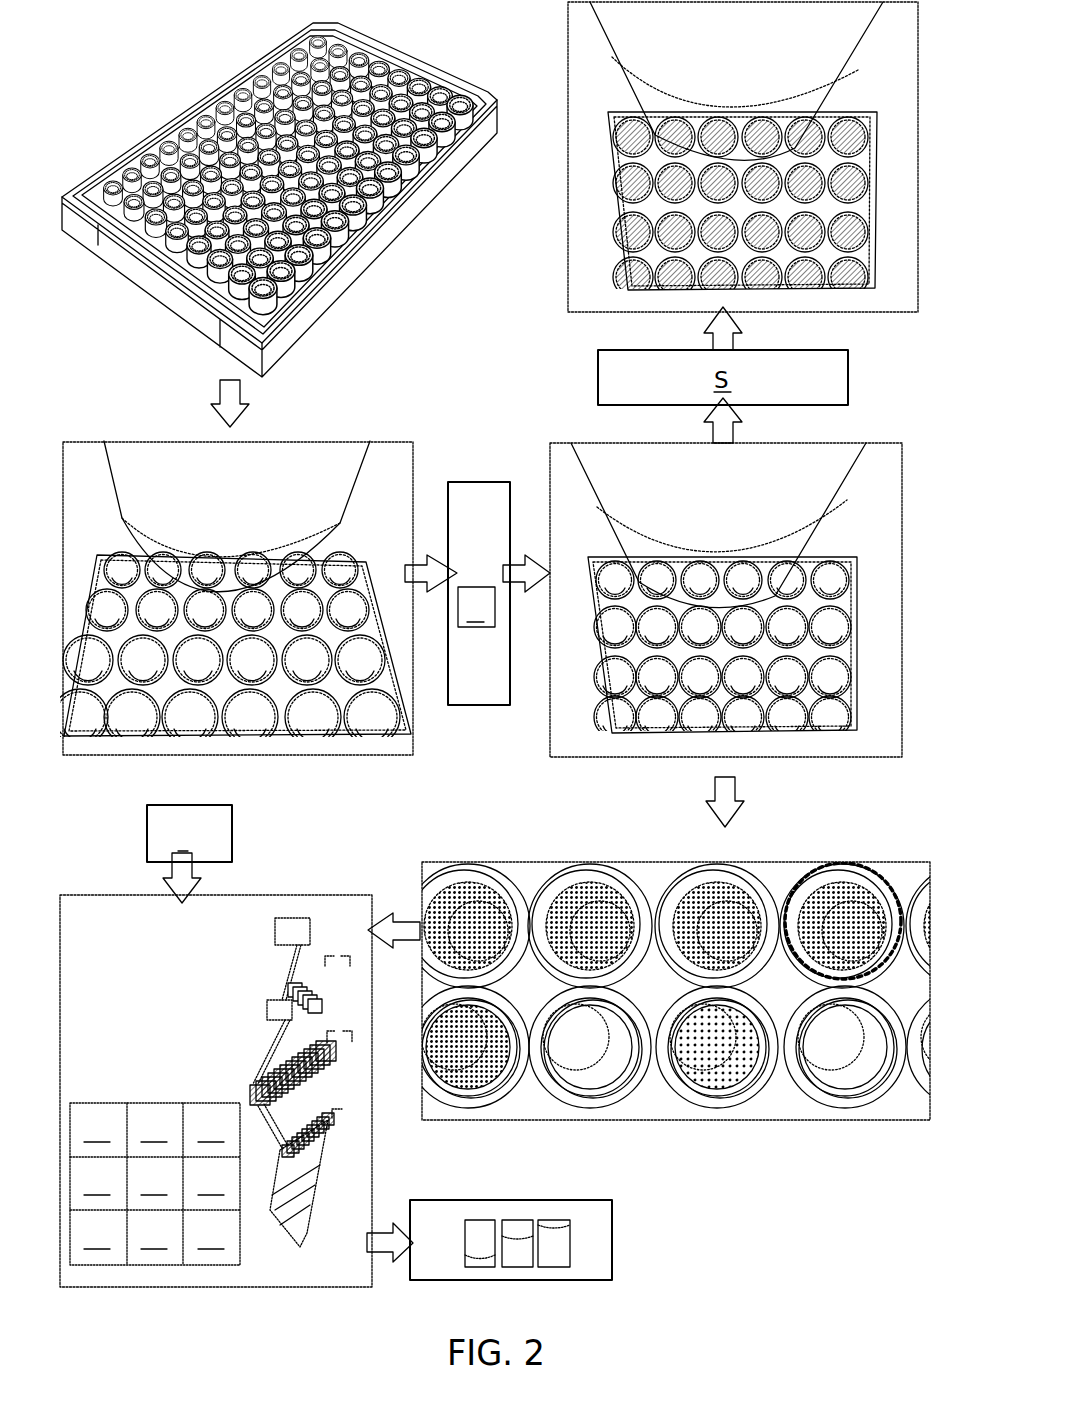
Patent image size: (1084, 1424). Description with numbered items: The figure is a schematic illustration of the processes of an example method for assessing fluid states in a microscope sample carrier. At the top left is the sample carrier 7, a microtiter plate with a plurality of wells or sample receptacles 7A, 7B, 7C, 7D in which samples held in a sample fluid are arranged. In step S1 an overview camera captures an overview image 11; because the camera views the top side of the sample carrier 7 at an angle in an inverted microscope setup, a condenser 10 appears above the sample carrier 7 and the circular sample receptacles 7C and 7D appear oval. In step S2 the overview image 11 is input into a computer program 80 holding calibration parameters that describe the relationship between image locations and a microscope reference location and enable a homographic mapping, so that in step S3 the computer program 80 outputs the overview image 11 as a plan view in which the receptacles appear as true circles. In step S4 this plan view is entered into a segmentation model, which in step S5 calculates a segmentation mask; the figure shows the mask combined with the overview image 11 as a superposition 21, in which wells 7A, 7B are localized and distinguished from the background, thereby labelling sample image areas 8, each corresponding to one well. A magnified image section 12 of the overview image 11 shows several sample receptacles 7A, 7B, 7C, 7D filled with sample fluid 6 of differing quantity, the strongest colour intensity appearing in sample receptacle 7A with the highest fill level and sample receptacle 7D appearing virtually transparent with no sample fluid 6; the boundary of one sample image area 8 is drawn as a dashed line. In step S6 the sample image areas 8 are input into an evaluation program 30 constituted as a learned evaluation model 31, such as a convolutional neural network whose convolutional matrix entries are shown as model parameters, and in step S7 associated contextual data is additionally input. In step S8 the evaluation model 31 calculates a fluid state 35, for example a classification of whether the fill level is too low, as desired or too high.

The sample fluid 6 is at (462, 1100).
The sample carrier 7 is at (273, 34).
The sample receptacle 7A is at (485, 1106).
The sample receptacle 7B is at (605, 1106).
The sample receptacle 7C is at (740, 1106).
The sample receptacle 7D is at (858, 1106).
The sample image area 8 is at (788, 867).
The condenser 10 is at (242, 509).
The overview image 11 is at (338, 426).
The magnified image section 12 is at (718, 992).
The superposition 21 is at (552, 91).
The evaluation program 30 is at (216, 1046).
The evaluation model 31 is at (163, 972).
The fluid state 35 is at (453, 1257).
The computer program 80 is at (495, 540).
The step S1 is at (220, 417).
The step S2 is at (427, 572).
The step S3 is at (518, 572).
The step S4 is at (703, 430).
The step S5 is at (713, 340).
The step S6 is at (383, 923).
The step S7 is at (177, 870).
The step S8 is at (383, 1237).